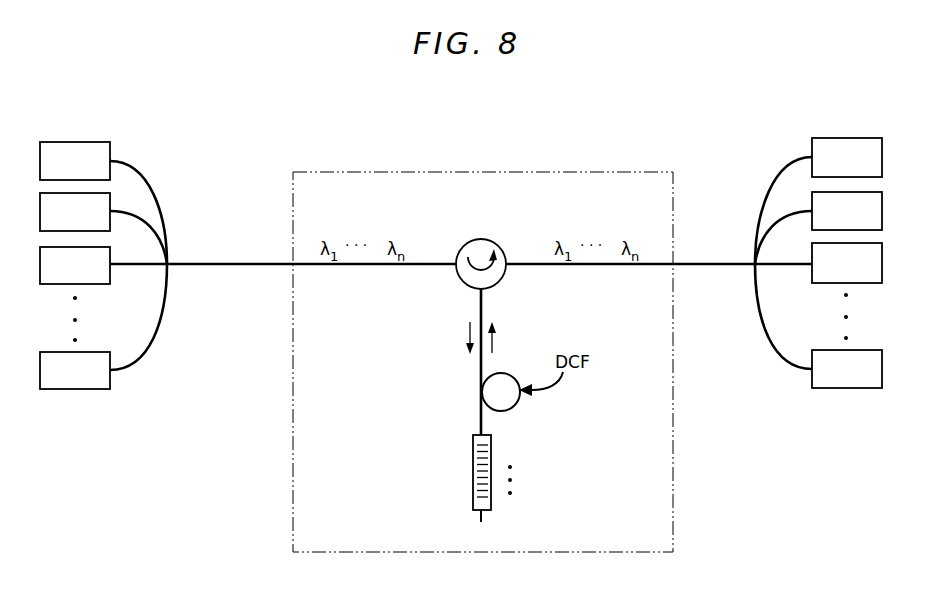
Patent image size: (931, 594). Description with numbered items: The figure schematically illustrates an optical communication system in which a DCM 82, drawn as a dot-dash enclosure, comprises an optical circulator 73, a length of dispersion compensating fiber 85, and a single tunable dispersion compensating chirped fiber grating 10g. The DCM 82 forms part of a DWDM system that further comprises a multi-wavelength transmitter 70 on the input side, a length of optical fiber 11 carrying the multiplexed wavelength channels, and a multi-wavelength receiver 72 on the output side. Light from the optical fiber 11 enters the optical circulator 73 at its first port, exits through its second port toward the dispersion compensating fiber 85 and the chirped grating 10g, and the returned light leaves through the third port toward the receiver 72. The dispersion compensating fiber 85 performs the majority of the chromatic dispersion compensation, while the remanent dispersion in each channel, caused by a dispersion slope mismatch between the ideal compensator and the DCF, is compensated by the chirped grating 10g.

The multi-wavelength transmitter 70 is at (152, 338).
The multi-wavelength receiver 72 is at (766, 332).
The DCM 82 is at (640, 172).
The optical circulator 73 is at (485, 238).
The optical fiber 11 is at (545, 265).
The dispersion compensating fiber 85 is at (501, 392).
The tunable dispersion compensating chirped fiber grating 10g is at (455, 472).